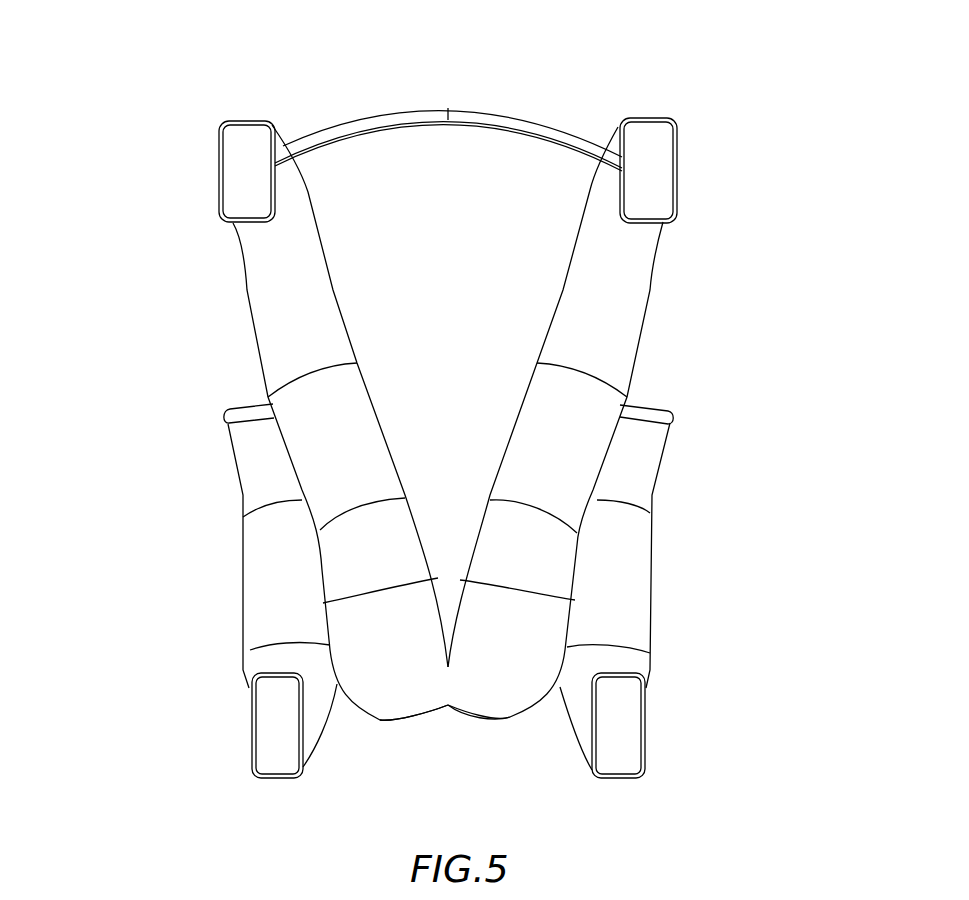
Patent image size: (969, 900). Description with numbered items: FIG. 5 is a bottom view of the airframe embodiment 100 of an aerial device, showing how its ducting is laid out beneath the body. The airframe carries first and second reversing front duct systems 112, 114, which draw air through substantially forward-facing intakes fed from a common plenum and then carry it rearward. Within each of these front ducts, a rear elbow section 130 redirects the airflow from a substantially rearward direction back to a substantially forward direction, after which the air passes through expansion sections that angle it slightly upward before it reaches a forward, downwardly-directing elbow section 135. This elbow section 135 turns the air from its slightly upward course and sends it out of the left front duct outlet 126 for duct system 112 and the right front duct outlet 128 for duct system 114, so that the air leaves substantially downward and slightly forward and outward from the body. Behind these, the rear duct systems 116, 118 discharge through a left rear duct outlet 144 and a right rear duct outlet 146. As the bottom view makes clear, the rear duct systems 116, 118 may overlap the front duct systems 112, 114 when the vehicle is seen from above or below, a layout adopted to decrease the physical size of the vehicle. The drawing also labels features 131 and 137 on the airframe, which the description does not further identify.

The airframe embodiment 100 is at (402, 288).
The first reversing front duct system 112 is at (572, 417).
The second reversing front duct system 114 is at (305, 333).
The rear duct system 116 is at (262, 573).
The rear duct system 118 is at (616, 573).
The left front duct outlet 126 is at (678, 168).
The right front duct outlet 128 is at (218, 168).
The rear elbow section 130 is at (514, 708).
The left lower edge portion 131 is at (400, 706).
The forward, downwardly-directing elbow section 135 is at (628, 277).
The left strap seam region 137 is at (272, 263).
The left rear duct outlet 144 is at (645, 737).
The right rear duct outlet 146 is at (253, 746).